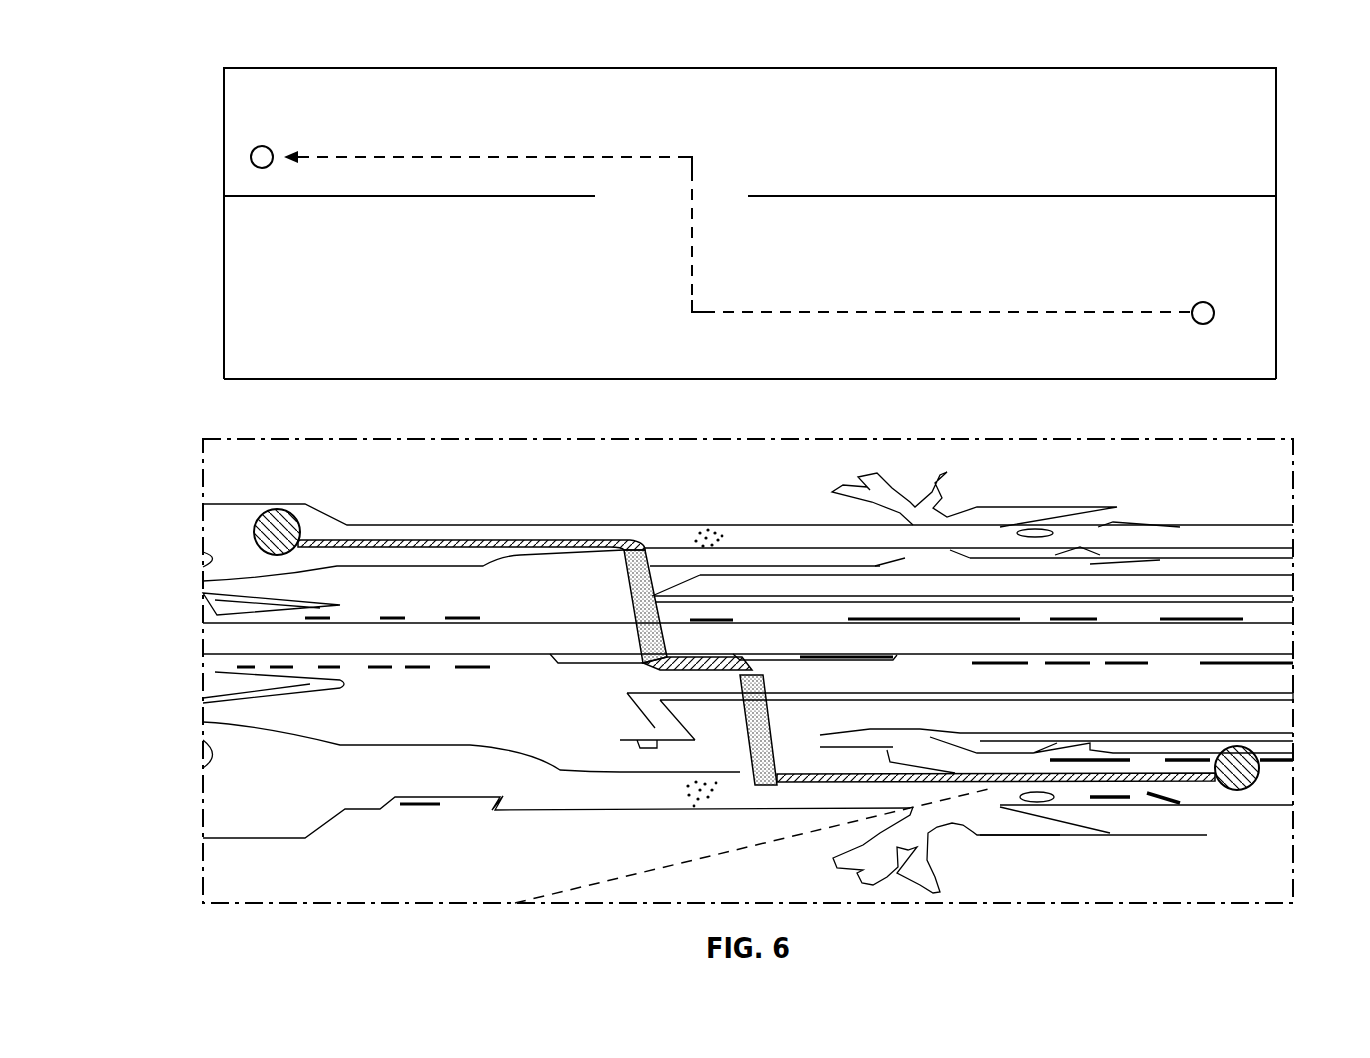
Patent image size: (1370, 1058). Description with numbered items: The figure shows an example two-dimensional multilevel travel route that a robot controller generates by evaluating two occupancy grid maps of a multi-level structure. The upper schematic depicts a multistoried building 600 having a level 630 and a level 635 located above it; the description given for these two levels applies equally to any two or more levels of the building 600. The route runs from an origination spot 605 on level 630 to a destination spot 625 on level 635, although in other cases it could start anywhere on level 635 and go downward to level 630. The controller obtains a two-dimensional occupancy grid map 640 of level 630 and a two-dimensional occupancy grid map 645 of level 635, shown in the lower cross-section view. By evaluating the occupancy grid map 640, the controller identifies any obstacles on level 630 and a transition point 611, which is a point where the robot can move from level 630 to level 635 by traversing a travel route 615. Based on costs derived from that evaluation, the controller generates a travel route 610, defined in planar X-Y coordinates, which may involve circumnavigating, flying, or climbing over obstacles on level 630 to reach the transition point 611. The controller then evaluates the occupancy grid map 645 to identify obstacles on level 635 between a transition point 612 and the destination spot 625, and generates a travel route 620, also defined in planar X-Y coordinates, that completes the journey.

The multistoried building 600 is at (210, 76).
The origination spot 605 is at (1205, 300).
The travel route 610 is at (852, 311).
The transition point 611 is at (688, 322).
The transition point 612 is at (700, 156).
The travel route 615 is at (690, 250).
The travel route 620 is at (510, 155).
The destination spot 625 is at (262, 143).
The level 630 is at (205, 305).
The level 635 is at (205, 165).
The 2D OG map 640 is at (183, 787).
The 2D OG map 645 is at (175, 553).